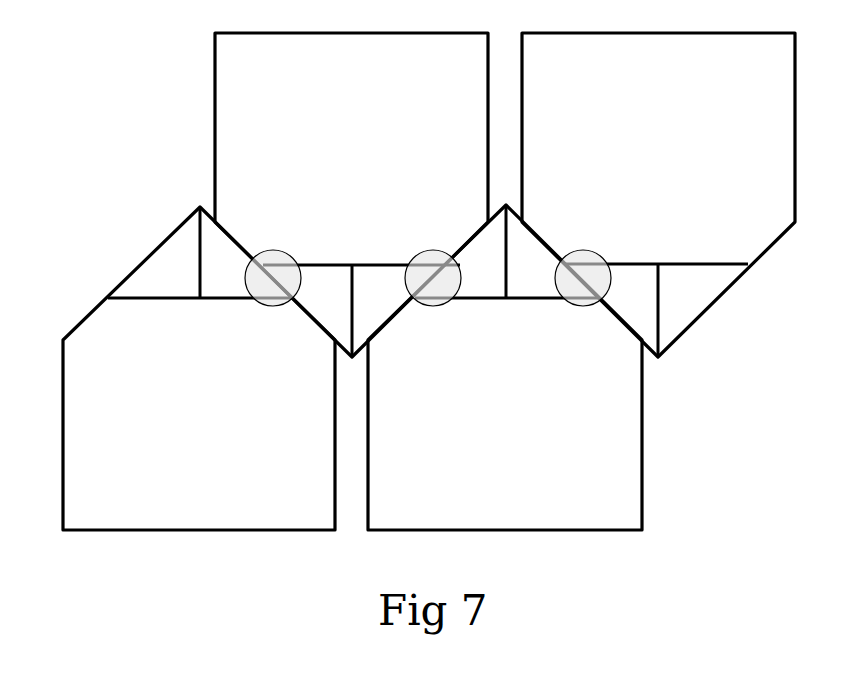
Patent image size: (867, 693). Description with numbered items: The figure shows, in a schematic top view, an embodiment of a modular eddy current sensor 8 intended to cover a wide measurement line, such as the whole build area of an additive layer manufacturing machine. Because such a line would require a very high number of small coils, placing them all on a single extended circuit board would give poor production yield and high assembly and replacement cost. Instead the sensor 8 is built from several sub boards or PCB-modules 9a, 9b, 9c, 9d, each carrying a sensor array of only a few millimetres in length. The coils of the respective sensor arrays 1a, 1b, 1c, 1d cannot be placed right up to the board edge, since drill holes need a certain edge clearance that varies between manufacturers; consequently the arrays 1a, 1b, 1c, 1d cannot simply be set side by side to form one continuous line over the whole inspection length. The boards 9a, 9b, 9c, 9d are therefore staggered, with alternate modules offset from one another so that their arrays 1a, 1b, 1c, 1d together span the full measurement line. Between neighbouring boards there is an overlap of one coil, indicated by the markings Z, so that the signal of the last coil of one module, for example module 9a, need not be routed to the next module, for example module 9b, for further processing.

The eddy current sensor 8 is at (115, 127).
The PCB-module 9a is at (101, 503).
The PCB-module 9b is at (457, 83).
The PCB-module 9c is at (411, 503).
The PCB-module 9d is at (756, 83).
The sensor array 1a is at (170, 300).
The sensor array 1b is at (323, 262).
The sensor array 1c is at (527, 300).
The sensor array 1d is at (648, 260).
The marking of coil overlap Z is at (587, 307).